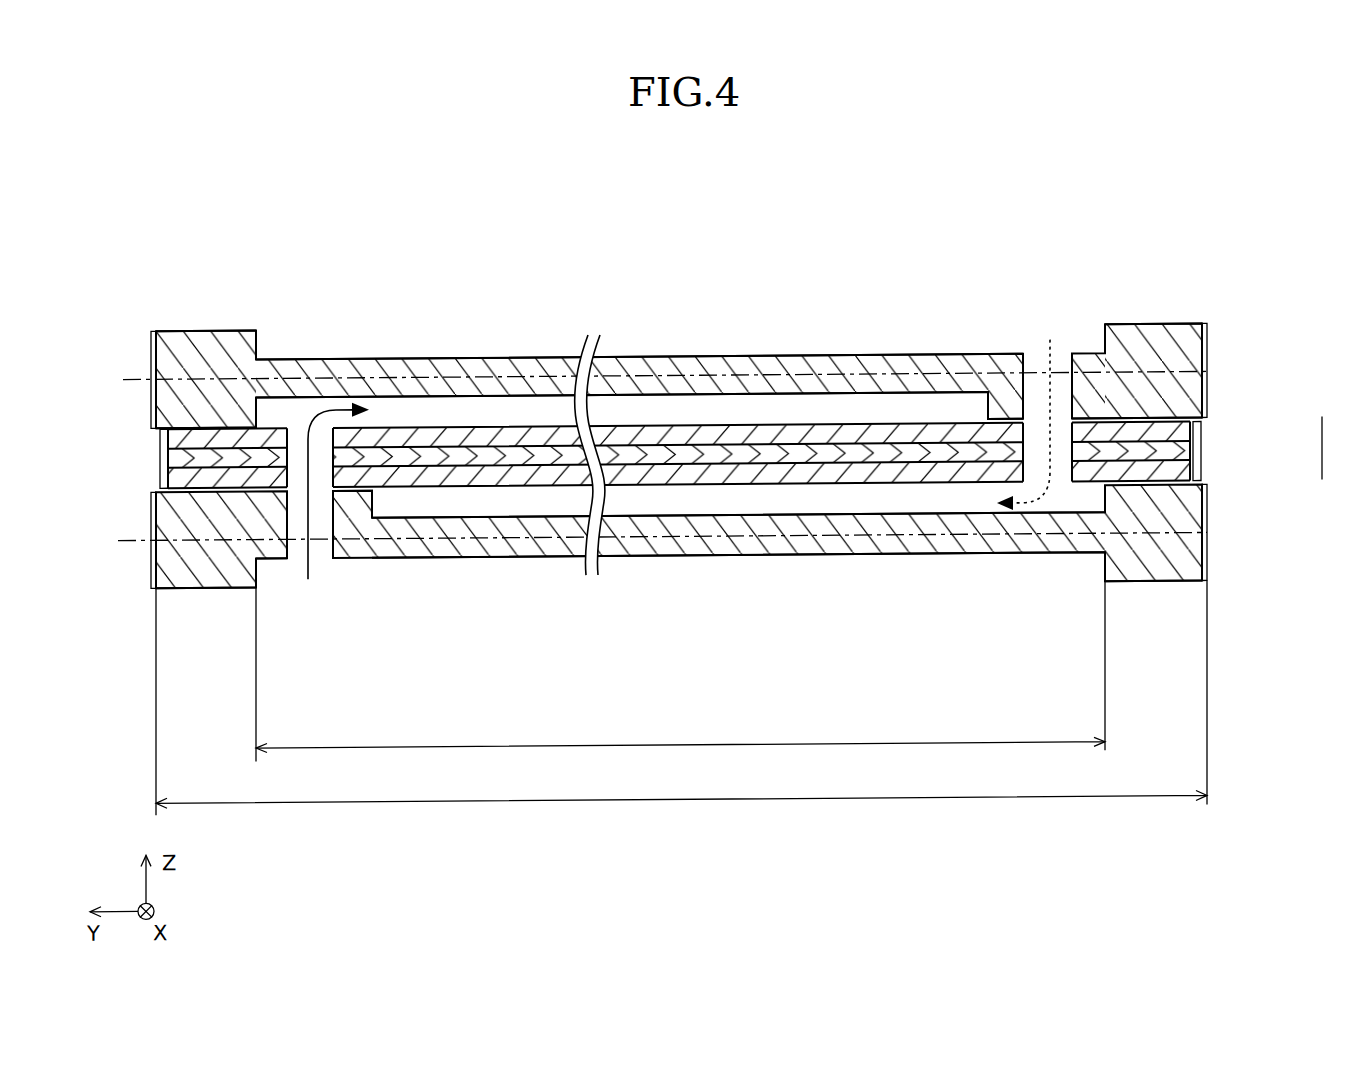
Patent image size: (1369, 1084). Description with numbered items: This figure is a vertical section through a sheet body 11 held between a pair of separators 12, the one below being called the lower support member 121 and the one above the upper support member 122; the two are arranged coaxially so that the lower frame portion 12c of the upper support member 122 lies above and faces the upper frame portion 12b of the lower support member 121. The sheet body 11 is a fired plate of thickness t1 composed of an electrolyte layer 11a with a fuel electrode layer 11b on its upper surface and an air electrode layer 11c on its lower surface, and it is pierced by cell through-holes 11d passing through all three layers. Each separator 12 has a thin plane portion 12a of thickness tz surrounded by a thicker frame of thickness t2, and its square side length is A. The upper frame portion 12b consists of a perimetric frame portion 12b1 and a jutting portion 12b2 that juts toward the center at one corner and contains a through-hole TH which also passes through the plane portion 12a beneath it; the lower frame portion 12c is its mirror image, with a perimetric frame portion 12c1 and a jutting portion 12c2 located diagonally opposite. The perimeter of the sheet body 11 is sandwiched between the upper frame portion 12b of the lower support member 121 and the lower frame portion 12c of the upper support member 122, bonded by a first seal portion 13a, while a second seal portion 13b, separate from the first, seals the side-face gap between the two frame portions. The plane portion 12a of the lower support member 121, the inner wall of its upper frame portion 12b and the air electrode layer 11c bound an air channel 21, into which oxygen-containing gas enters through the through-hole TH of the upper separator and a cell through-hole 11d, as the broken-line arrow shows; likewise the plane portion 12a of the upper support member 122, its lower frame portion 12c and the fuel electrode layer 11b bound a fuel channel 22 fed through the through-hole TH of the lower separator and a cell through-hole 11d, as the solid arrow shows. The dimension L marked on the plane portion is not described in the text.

The sheet body 11 is at (725, 415).
The electrolyte layer 11a is at (840, 457).
The fuel electrode layer 11b is at (792, 436).
The air electrode layer 11c is at (904, 477).
The cell through-hole 11d is at (290, 462).
The separator 12 is at (706, 229).
The lower support member 121 is at (788, 633).
The upper support member 122 is at (679, 375).
The plane portion 12a is at (645, 360).
The upper frame portion 12b is at (250, 274).
The perimetric frame portion 12b1 is at (190, 332).
The jutting portion 12b2 is at (349, 512).
The lower frame portion 12c is at (140, 424).
The perimetric frame portion 12c1 is at (177, 427).
The jutting portion 12c2 is at (1008, 413).
The first seal portion 13a is at (207, 427).
The second seal portion 13b is at (160, 466).
The air channel 21 is at (688, 517).
The fuel channel 22 is at (668, 425).
The through-hole TH is at (334, 522).
The thickness of the plane portion tz is at (508, 323).
The thickness of the sheet body t1 is at (1337, 447).
The thickness of the frame portion t2 is at (1335, 588).
The plate length L is at (680, 656).
The length of one side of the separator A is at (681, 697).